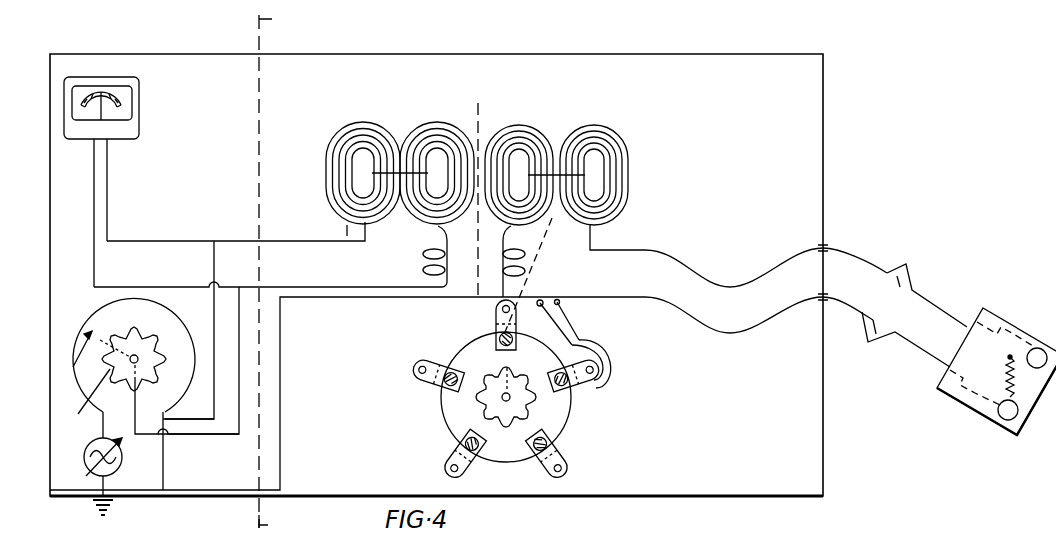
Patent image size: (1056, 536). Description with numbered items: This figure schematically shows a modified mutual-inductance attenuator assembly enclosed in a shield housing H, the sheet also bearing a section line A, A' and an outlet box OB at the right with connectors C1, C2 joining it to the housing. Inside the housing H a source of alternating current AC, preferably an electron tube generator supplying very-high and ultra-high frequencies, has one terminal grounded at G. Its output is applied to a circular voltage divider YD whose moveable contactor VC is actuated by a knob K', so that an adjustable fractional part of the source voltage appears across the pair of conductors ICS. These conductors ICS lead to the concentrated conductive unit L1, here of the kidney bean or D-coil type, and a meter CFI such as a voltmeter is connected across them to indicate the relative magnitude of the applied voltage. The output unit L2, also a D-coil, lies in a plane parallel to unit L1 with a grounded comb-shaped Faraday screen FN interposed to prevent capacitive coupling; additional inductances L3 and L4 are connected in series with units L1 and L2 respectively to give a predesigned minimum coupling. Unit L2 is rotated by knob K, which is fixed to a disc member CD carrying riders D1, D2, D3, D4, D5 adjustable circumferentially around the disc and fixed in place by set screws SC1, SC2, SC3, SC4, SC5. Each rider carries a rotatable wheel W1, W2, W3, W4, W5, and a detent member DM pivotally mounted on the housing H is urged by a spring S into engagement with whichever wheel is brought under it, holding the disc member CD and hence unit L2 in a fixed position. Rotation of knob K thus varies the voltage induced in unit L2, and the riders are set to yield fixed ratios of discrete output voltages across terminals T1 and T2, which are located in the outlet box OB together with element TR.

The shield housing H is at (464, 55).
The section line A is at (274, 271).
The section line A' is at (269, 523).
The meter CFI is at (84, 79).
The concentrated electrically conductive unit L1 is at (347, 131).
The output unit L2 is at (610, 140).
The additional inductance L3 is at (422, 268).
The additional inductance L4 is at (504, 264).
The Faraday screen FN is at (476, 104).
The tuning dial YD is at (170, 315).
The moveable contactor VC is at (76, 367).
The knob K' is at (87, 399).
The source of alternating current AC is at (85, 452).
The ground G is at (110, 513).
The conductors ICS is at (190, 436).
The disc member CD is at (565, 437).
The knob K is at (474, 403).
The rider D1 is at (575, 391).
The rider D2 is at (553, 454).
The rider D3 is at (473, 459).
The rider D4 is at (438, 390).
The rider D5 is at (496, 324).
The rotatable wheel W1 is at (588, 382).
The rotatable wheel W2 is at (562, 470).
The rotatable wheel W3 is at (444, 472).
The rotatable wheel W4 is at (427, 386).
The rotatable wheel W5 is at (499, 310).
The set screw SC1 is at (564, 402).
The set screw SC2 is at (538, 462).
The set screw SC3 is at (456, 447).
The set screw SC4 is at (452, 372).
The set screw SC5 is at (497, 339).
The spring S is at (563, 313).
The detent member DM is at (603, 361).
The cable connector C1 is at (913, 266).
The cable connector C2 is at (867, 346).
The outlet box OB is at (1011, 318).
The terminal T1 is at (1037, 347).
The terminal T2 is at (1003, 421).
The resistor TR is at (1016, 380).